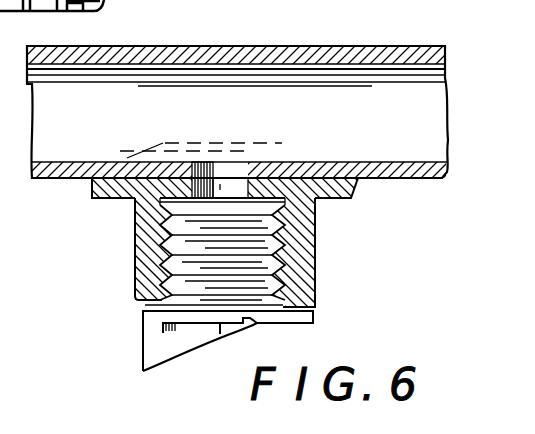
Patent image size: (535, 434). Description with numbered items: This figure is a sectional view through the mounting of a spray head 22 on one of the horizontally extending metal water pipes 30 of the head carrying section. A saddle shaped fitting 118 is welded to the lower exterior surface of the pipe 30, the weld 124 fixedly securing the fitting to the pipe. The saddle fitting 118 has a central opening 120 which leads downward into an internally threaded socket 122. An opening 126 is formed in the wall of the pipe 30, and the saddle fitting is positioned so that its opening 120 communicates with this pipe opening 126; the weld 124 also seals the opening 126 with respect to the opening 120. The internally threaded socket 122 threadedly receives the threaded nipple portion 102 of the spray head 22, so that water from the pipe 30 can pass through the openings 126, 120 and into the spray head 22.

The water pipe 30 is at (304, 46).
The central opening 120 is at (217, 178).
The opening 126 is at (262, 147).
The saddle shaped fitting 118 is at (92, 183).
The weld 124 is at (360, 178).
The threaded nipple portion 102 is at (282, 268).
The internally threaded socket 122 is at (165, 251).
The spray head 22 is at (141, 353).